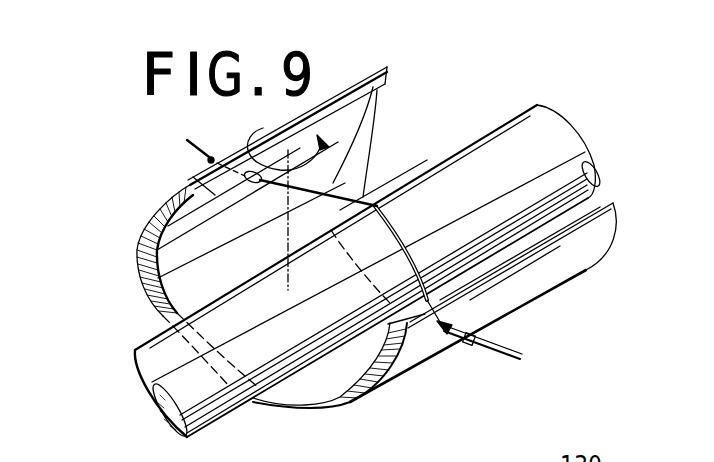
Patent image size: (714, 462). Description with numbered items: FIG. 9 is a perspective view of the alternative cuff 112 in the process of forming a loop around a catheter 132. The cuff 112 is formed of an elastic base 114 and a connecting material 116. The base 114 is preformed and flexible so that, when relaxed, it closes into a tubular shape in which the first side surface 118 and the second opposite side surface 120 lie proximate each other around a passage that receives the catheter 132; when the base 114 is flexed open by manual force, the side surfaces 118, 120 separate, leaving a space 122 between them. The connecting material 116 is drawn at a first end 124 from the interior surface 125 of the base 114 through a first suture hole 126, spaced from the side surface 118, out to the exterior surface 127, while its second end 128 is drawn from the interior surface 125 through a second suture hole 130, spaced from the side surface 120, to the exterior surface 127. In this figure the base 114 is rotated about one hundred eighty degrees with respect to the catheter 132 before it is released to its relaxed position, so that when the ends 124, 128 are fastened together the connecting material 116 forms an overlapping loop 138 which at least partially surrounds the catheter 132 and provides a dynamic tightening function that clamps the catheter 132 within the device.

The cuff 112 is at (130, 253).
The elastic base 114 is at (194, 178).
The connecting material 116 is at (333, 183).
The first side surface 118 is at (598, 205).
The second opposite side surface 120 is at (347, 92).
The space 122 is at (417, 98).
The first end 124 is at (524, 359).
The interior surface 125 is at (307, 378).
The first suture hole 126 is at (434, 341).
The exterior surface 127 is at (552, 266).
The second end 128 is at (187, 140).
The second suture hole 130 is at (250, 185).
The catheter 132 is at (507, 132).
The loop 138 is at (370, 167).